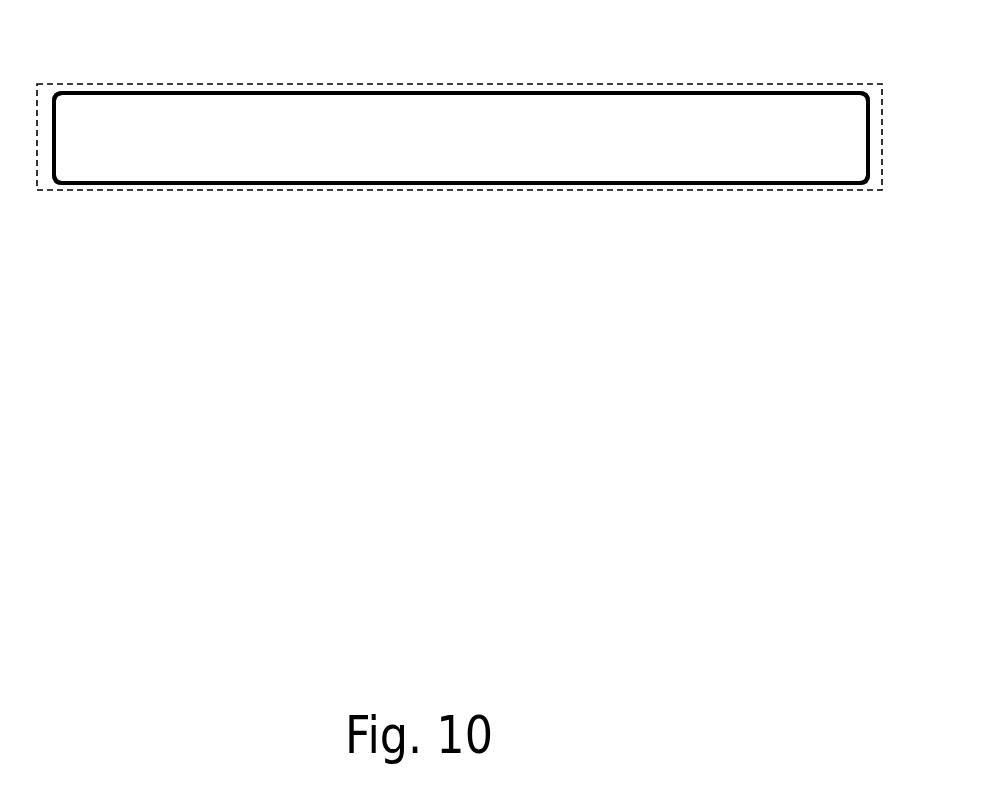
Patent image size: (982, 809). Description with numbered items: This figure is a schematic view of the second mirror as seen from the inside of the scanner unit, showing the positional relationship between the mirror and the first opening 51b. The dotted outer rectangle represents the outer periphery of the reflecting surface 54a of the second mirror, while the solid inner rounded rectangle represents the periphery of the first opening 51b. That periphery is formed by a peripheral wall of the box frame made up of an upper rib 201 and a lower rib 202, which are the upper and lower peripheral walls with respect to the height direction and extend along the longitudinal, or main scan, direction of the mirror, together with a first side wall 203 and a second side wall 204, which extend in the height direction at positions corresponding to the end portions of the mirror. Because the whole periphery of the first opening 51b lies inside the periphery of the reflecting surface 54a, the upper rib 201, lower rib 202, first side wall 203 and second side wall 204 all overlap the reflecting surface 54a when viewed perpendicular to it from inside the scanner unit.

The first opening 51b is at (430, 182).
The reflecting surface 54a is at (760, 188).
The upper rib 201 is at (165, 95).
The lower rib 202 is at (693, 180).
The first side wall 203 is at (867, 135).
The second side wall 204 is at (55, 137).